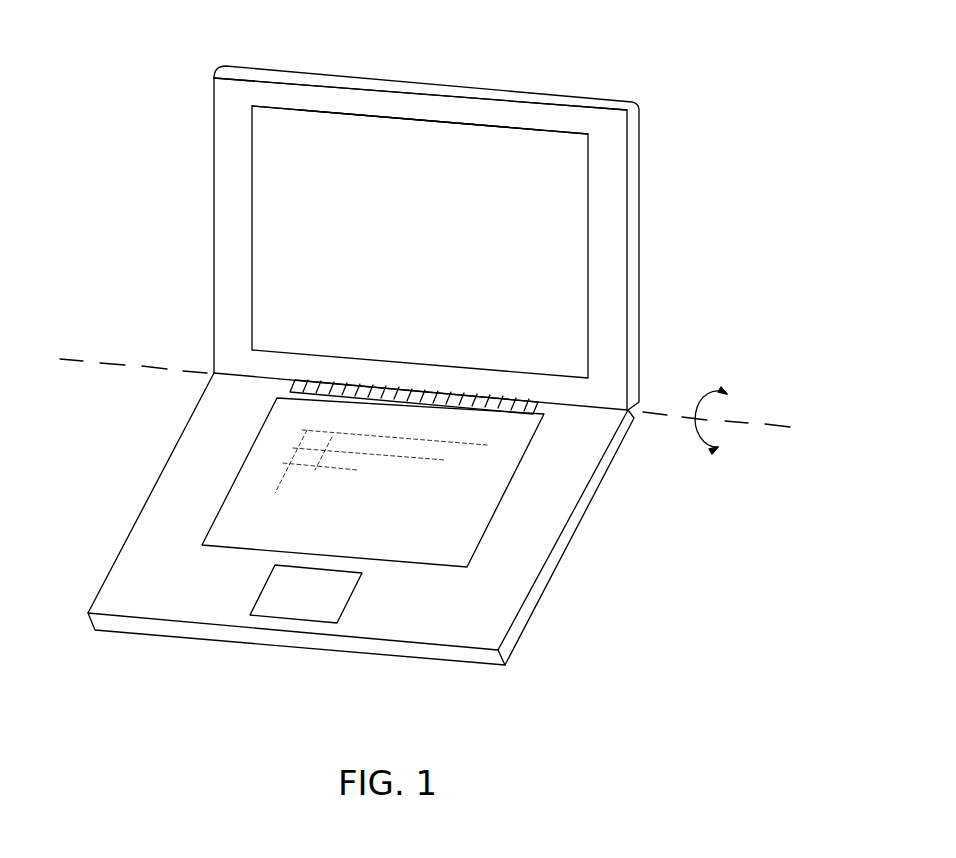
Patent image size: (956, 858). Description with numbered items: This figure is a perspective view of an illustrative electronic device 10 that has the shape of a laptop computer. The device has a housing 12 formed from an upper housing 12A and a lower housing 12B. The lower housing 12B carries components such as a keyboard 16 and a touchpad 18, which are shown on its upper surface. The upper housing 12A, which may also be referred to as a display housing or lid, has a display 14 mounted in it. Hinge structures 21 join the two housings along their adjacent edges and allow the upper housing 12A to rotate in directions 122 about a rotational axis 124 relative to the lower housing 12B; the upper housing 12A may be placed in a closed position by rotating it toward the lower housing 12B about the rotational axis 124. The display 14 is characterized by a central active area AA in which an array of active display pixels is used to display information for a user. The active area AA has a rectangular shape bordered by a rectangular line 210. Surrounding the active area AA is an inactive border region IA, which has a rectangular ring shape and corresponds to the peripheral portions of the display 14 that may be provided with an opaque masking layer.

The electronic device 10 is at (711, 99).
The housing 12 is at (640, 348).
The upper housing 12A is at (202, 75).
The lower housing 12B is at (195, 378).
The display 14 is at (555, 230).
The keyboard 16 is at (500, 502).
The touchpad 18 is at (347, 602).
The hinge structures 21 is at (530, 401).
The directions 122 is at (700, 448).
The rotational axis 124 is at (73, 360).
The rectangular line 210 is at (327, 112).
The inactive border region IA is at (407, 105).
The active area AA is at (472, 143).